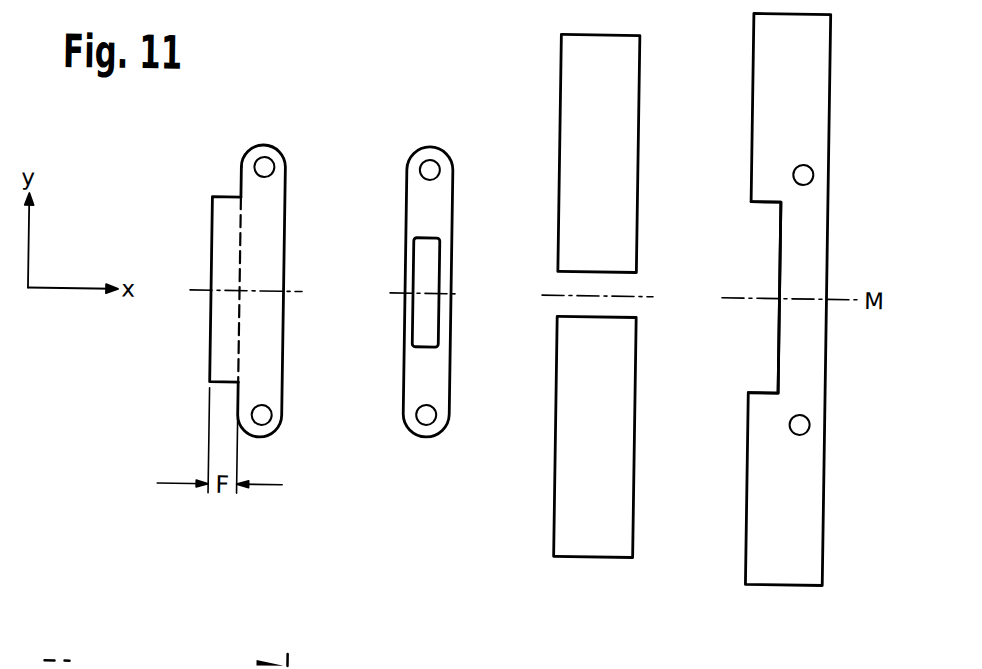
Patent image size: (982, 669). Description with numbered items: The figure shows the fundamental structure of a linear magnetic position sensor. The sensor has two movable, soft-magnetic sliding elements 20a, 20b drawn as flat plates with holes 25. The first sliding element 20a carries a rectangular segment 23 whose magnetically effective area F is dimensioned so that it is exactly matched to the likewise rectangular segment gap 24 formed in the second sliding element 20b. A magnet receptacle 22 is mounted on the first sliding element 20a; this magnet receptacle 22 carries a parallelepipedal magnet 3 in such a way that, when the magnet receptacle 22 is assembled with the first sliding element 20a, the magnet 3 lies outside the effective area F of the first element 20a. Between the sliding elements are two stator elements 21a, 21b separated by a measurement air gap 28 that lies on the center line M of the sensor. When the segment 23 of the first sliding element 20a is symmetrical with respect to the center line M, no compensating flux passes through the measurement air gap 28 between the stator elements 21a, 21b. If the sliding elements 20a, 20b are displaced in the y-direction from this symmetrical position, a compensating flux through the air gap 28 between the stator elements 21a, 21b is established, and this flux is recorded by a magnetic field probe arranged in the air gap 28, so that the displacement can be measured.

The magnet 3 is at (426, 328).
The first sliding element 20a is at (269, 237).
The second sliding element 20b is at (801, 82).
The stator element 21a is at (627, 83).
The stator element 21b is at (618, 503).
The magnet receptacle 22 is at (434, 224).
The rectangular segment 23 is at (209, 231).
The segment gap 24 is at (771, 241).
The holes 25 is at (265, 170).
The measurement air gap 28 is at (620, 306).